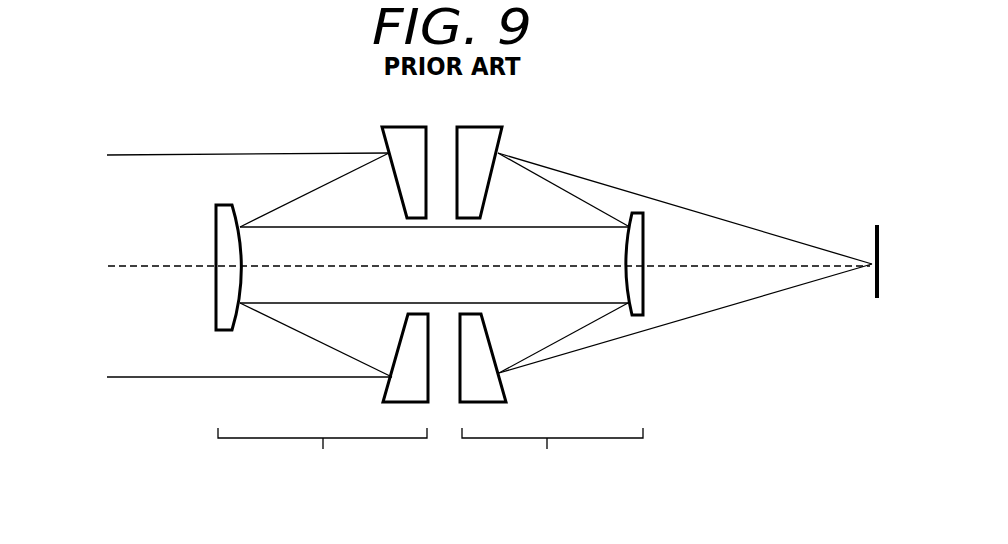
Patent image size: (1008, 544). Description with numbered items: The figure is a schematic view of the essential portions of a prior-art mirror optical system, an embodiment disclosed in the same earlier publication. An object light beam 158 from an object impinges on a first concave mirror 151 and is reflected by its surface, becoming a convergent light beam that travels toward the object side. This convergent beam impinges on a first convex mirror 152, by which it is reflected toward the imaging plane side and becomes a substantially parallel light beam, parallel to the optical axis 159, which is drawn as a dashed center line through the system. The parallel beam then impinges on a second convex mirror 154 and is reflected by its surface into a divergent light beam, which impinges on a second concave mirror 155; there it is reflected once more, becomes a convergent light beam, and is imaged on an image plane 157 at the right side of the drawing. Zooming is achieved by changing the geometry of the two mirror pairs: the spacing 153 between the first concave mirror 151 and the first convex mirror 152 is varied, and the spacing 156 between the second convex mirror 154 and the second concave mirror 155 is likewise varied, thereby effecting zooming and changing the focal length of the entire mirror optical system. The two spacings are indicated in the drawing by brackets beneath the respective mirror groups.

The first concave mirror 151 is at (390, 127).
The first convex mirror 152 is at (216, 218).
The spacing 153 is at (323, 400).
The second convex mirror 154 is at (644, 229).
The second concave mirror 155 is at (497, 127).
The spacing 156 is at (551, 400).
The image plane 157 is at (879, 229).
The object light beam 158 is at (130, 154).
The optical axis 159 is at (131, 266).